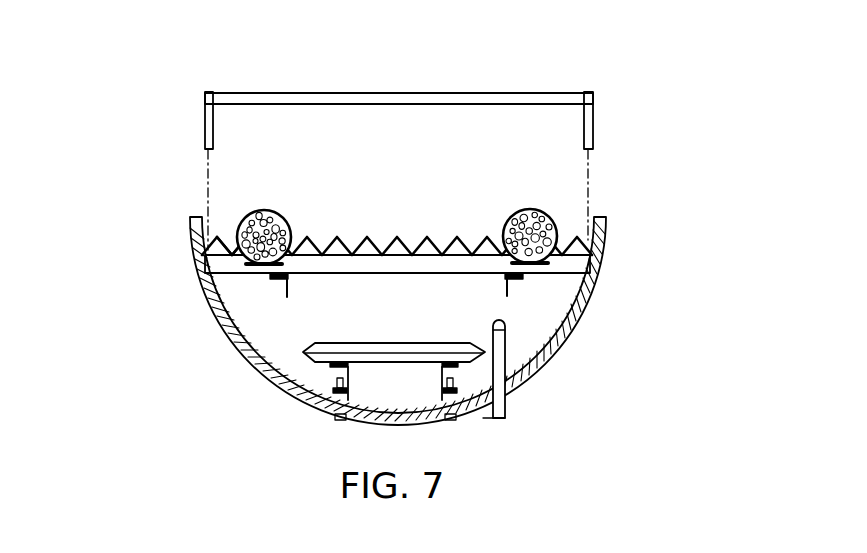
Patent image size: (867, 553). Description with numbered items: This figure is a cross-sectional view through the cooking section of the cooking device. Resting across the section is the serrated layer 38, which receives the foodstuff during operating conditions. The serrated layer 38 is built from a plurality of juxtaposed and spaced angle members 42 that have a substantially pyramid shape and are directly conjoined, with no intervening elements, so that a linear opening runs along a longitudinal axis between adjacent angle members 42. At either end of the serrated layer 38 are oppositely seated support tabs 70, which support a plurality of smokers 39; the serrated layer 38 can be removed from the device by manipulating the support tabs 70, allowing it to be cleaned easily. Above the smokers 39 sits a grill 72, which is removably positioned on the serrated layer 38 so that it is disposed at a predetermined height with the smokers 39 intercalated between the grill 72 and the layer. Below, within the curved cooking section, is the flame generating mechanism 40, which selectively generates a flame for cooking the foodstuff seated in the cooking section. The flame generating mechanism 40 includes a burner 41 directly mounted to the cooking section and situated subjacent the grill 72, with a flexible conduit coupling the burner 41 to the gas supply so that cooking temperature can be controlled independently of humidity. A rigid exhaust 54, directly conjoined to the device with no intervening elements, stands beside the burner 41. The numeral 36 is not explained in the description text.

The support plate 36 is at (488, 274).
The serrated layer 38 is at (340, 245).
The smokers 39 is at (243, 212).
The flame generating mechanism 40 is at (300, 409).
The burner 41 is at (395, 347).
The angle members 42 is at (435, 242).
The rigid exhausts 54 is at (508, 342).
The support tabs 70 is at (257, 266).
The grill 72 is at (455, 90).